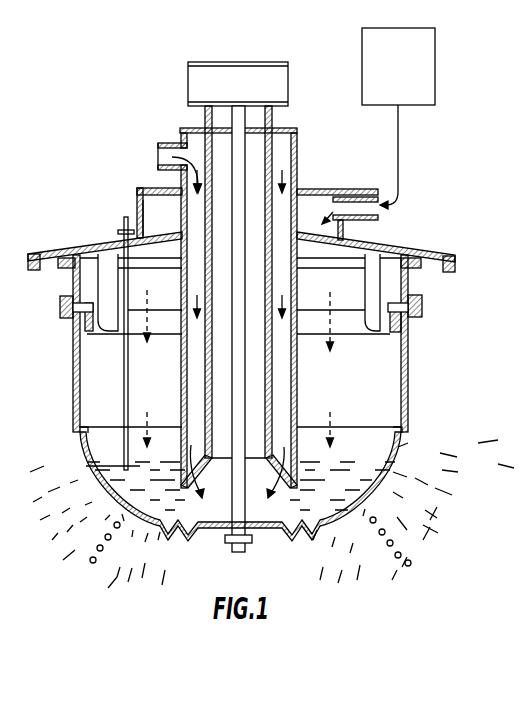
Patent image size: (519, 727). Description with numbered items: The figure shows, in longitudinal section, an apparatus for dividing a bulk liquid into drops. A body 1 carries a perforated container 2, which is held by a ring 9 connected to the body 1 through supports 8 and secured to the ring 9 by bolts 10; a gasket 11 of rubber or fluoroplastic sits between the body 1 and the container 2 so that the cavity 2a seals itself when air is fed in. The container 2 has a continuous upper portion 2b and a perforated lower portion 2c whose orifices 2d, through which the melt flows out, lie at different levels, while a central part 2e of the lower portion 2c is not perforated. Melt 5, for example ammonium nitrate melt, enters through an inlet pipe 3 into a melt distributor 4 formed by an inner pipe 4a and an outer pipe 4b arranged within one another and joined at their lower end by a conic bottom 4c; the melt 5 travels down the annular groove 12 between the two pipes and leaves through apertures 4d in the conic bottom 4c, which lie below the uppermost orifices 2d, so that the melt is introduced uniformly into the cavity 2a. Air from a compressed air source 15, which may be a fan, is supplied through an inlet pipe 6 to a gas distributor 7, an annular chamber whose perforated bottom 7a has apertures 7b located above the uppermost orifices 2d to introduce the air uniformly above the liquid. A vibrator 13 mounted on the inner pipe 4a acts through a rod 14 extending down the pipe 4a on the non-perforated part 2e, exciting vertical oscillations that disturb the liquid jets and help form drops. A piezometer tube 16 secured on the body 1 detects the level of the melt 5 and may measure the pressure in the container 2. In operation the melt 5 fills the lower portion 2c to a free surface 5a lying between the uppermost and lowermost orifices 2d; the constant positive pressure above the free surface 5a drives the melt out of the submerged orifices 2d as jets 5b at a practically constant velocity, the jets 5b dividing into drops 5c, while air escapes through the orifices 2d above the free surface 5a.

The body 1 is at (447, 253).
The perforated container 2 is at (244, 412).
The cavity 2a is at (401, 461).
The continuous upper portion 2b is at (408, 378).
The perforated lower portion 2c is at (410, 435).
The orifices 2d is at (80, 438).
The central part 2e is at (222, 537).
The inlet pipe 3 is at (166, 143).
The distributor 4 is at (301, 396).
The inner pipe 4a is at (205, 363).
The outer pipe 4b is at (182, 397).
The conic bottom 4c is at (208, 462).
The apertures 4d is at (266, 464).
The melt 5 is at (341, 468).
The free surface 5a is at (152, 462).
The jets 5b is at (450, 493).
The drops 5c is at (401, 556).
The inlet pipe 6 is at (372, 216).
The gas distributor 7 is at (138, 206).
The perforated bottom 7a is at (150, 236).
The apertures 7b is at (299, 233).
The supports 8 is at (110, 310).
The ring 9 is at (158, 318).
The bolts 10 is at (62, 304).
The gasket 11 is at (64, 268).
The annular groove 12 is at (286, 160).
The vibrator 13 is at (278, 82).
The rod 14 is at (240, 160).
The compressed air source 15 is at (398, 118).
The piezometer tube 16 is at (120, 232).